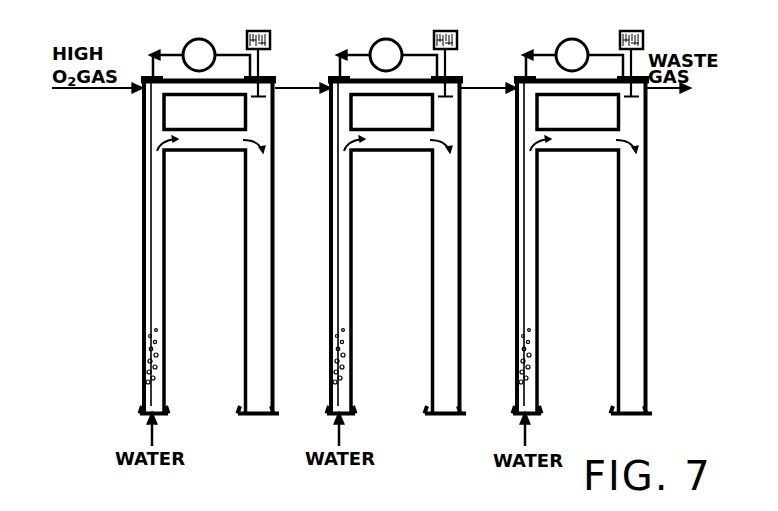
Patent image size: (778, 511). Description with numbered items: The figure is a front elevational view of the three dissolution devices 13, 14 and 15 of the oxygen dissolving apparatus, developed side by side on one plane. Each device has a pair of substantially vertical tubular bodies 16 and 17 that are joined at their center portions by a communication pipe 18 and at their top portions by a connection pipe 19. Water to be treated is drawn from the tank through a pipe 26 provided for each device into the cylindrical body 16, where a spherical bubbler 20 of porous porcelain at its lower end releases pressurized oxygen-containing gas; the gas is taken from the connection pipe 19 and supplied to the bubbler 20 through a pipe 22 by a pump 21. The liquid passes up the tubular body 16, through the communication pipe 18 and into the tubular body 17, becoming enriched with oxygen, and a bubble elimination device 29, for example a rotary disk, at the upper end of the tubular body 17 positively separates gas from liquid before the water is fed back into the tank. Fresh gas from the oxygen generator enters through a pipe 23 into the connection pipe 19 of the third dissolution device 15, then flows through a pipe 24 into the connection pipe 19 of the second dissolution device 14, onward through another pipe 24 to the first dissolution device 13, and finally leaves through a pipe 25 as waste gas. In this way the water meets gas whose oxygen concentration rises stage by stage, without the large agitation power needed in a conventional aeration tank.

The first dissolution device 13 is at (137, 297).
The second dissolution device 14 is at (325, 319).
The third dissolution device 15 is at (513, 316).
The tubular body 16 is at (144, 241).
The tubular body 17 is at (245, 249).
The communication pipe 18 is at (187, 151).
The connection pipe 19 is at (214, 96).
The spherical bubbler 20 is at (145, 377).
The pump 21 is at (207, 26).
The pipe 22 is at (151, 184).
The pipe 23 is at (104, 90).
The pipe 24 is at (312, 86).
The pipe 25 is at (667, 92).
The pipe 26 is at (150, 437).
The bubble elimination device 29 is at (265, 98).